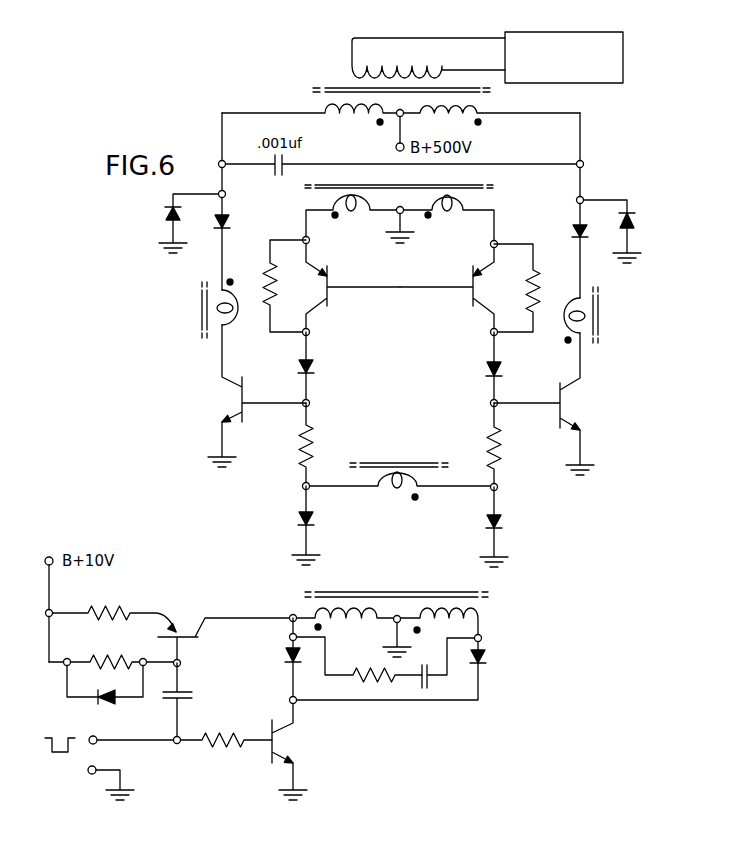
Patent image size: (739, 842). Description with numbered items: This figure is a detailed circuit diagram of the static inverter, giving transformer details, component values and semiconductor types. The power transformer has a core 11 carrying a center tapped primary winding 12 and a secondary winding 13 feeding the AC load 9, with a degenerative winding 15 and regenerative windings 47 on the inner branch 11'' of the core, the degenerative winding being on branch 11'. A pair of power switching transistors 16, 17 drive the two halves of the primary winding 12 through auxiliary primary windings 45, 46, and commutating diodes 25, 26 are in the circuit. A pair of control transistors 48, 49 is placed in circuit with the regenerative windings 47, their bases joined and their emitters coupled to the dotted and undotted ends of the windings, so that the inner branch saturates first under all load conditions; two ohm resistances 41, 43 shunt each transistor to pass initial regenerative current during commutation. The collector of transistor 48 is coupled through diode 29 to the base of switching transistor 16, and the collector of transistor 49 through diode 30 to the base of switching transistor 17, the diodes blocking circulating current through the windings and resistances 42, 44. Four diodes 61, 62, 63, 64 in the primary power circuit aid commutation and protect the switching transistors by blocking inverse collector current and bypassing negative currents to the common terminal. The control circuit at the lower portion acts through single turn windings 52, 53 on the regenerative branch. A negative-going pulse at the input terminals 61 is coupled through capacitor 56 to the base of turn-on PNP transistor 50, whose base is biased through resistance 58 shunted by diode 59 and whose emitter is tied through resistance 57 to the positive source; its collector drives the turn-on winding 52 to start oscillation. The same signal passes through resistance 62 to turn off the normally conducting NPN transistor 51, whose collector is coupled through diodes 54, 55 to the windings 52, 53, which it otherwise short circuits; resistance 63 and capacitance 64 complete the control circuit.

The AC load 9 is at (623, 44).
The core 11 is at (401, 72).
The drive transformer 11' is at (399, 452).
The inner branch 11'' is at (412, 386).
The center tapped primary winding 12 is at (347, 122).
The secondary winding 13 is at (438, 56).
The degenerative winding 15 is at (396, 494).
The power switching transistor 16 is at (238, 397).
The power switching transistor 17 is at (565, 405).
The commutating diode 25 is at (292, 519).
The commutating diode 26 is at (504, 522).
The diode 29 is at (315, 360).
The diode 30 is at (489, 363).
The two ohm resistance 41 is at (265, 268).
The resistance 42 is at (314, 438).
The two ohm resistance 43 is at (538, 281).
The resistance 44 is at (486, 442).
The auxiliary primary winding 45 is at (233, 322).
The auxiliary primary winding 46 is at (568, 325).
The regenerative winding 47 is at (370, 215).
The control transistor 48 is at (333, 298).
The control transistor 49 is at (467, 298).
The turn-on PNP transistor 50 is at (182, 621).
The turn-off NPN transistor 51 is at (286, 742).
The turn-on winding 52 is at (313, 607).
The control winding 53 is at (480, 614).
The diode 54 is at (288, 656).
The diode 55 is at (490, 660).
The capacitor 56 is at (196, 697).
The resistance 57 is at (112, 605).
The resistance 58 is at (98, 650).
The diode 59 is at (106, 704).
The diode 61 is at (214, 230).
The diode 62 is at (167, 220).
The diode 63 is at (584, 240).
The diode 64 is at (633, 230).